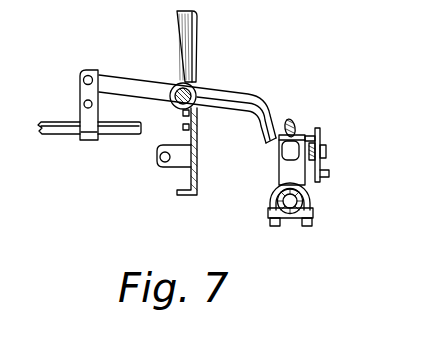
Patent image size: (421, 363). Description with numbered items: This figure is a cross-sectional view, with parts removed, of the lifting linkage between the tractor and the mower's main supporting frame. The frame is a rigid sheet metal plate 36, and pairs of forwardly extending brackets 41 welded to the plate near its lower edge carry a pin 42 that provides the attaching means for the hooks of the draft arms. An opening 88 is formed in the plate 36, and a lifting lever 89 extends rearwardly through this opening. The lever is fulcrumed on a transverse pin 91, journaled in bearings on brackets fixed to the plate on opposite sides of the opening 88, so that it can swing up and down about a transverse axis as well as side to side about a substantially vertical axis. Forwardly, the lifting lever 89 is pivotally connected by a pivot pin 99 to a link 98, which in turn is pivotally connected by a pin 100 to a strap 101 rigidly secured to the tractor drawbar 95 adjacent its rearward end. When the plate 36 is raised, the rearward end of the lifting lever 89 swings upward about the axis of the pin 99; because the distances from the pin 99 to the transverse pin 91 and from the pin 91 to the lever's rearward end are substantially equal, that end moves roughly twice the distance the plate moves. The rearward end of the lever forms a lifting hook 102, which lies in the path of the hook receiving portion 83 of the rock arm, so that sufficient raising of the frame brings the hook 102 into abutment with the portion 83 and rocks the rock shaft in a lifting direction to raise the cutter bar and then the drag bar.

The plate 36 is at (199, 178).
The brackets 41 is at (170, 168).
The pin 42 is at (172, 163).
The hook receiving portion 83 is at (294, 120).
The opening 88 is at (200, 80).
The lifting lever 89 is at (246, 94).
The transverse pin 91 is at (171, 93).
The drawbar 95 is at (55, 134).
The link 98 is at (80, 96).
The pivot pin 99 is at (90, 76).
The pin 100 is at (93, 104).
The strap 101 is at (86, 141).
The lifting hook 102 is at (280, 161).